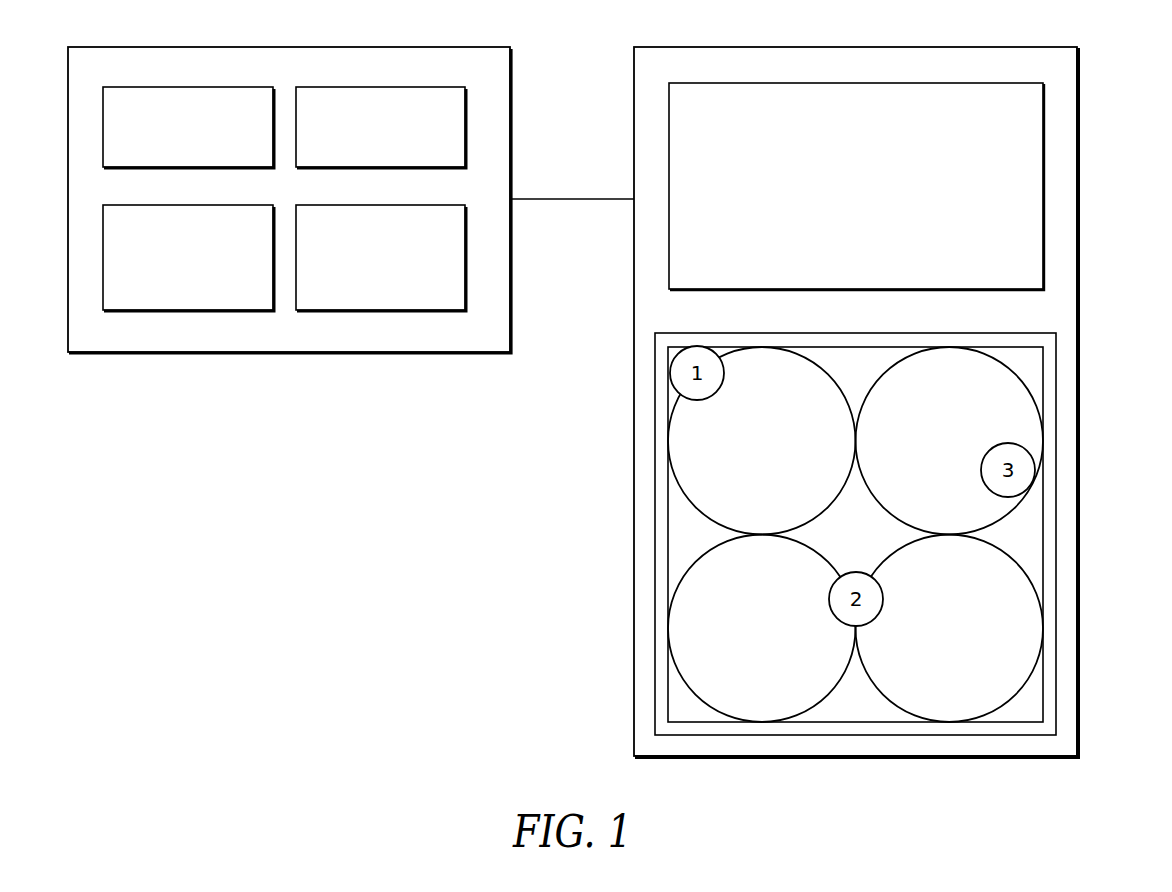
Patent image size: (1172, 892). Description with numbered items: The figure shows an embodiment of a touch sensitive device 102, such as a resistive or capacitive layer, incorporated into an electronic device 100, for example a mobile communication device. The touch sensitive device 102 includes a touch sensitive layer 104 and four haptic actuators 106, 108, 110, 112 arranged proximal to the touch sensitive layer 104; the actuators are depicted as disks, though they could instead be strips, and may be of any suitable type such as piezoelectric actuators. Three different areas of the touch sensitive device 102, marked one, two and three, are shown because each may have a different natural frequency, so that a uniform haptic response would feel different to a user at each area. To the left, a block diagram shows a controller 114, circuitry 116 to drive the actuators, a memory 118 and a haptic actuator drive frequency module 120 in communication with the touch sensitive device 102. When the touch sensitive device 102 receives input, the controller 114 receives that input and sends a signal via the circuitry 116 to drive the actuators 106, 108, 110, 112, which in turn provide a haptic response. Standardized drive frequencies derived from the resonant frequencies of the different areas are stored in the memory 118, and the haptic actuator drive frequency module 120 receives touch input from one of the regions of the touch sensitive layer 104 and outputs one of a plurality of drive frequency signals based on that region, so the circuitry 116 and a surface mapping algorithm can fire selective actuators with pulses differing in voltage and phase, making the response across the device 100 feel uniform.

The electronic device 100 is at (1134, 785).
The touch sensitive device 102 is at (855, 712).
The touch sensitive layer 104 is at (660, 694).
The haptic actuator 106 is at (703, 504).
The haptic actuator 108 is at (837, 552).
The haptic actuator 110 is at (1010, 565).
The haptic actuator 112 is at (887, 378).
The controller 114 is at (258, 86).
The circuitry to drive actuators 116 is at (451, 86).
The memory 118 is at (451, 204).
The haptic actuator drive frequency module 120 is at (258, 204).